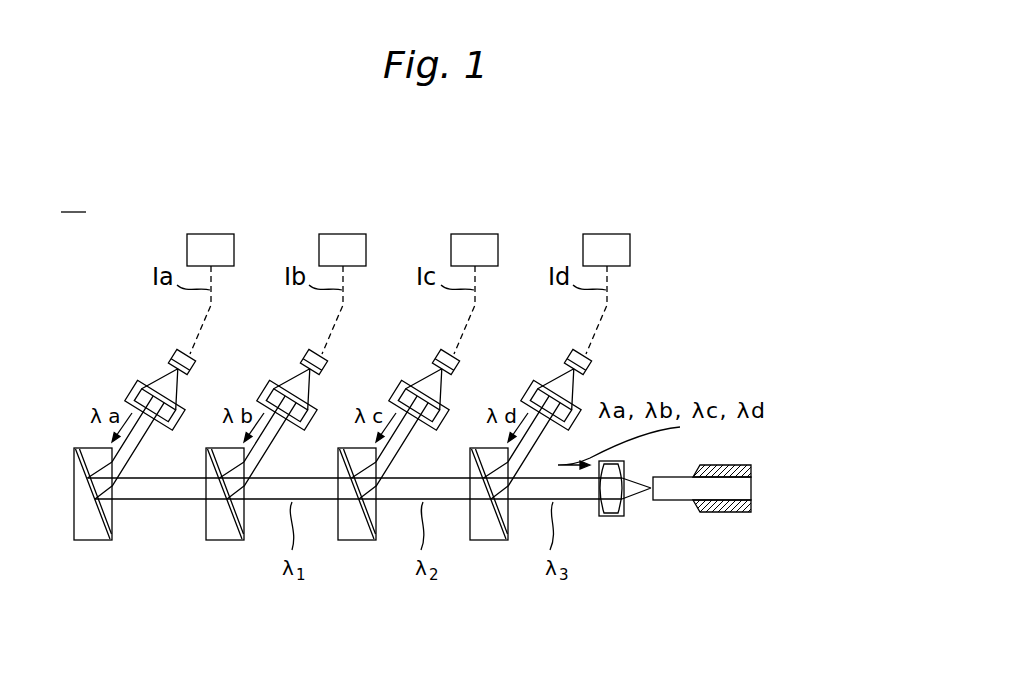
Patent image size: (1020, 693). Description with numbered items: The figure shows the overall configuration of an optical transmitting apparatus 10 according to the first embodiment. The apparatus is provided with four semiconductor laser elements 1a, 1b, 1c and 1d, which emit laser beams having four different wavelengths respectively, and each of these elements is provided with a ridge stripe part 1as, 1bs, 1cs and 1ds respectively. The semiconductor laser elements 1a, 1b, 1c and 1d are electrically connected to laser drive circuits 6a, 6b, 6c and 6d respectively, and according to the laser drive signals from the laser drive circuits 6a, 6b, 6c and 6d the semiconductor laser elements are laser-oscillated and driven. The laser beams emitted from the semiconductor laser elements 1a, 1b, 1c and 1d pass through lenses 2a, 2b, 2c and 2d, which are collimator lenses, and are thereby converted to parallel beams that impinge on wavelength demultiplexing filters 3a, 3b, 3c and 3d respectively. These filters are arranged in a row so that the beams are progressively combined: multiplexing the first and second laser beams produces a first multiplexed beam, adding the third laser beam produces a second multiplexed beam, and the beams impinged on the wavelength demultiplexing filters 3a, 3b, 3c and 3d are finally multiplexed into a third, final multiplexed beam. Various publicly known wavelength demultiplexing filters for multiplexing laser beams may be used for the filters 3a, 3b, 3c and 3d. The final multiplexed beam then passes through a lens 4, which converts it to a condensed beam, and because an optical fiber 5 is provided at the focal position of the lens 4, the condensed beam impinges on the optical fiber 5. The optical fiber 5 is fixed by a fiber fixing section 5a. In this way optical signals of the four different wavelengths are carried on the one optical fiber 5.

The optical transmitting apparatus 10 is at (77, 200).
The semiconductor laser element 1a is at (173, 352).
The semiconductor laser element 1b is at (287, 336).
The semiconductor laser element 1c is at (419, 336).
The semiconductor laser element 1d is at (551, 336).
The ridge stripe part 1as is at (185, 351).
The ridge stripe part 1bs is at (310, 334).
The ridge stripe part 1cs is at (441, 334).
The ridge stripe part 1ds is at (574, 334).
The lens 2a is at (136, 386).
The lens 2b is at (271, 382).
The lens 2c is at (403, 382).
The lens 2d is at (535, 382).
The wavelength demultiplexing filter 3a is at (90, 540).
The wavelength demultiplexing filter 3b is at (225, 531).
The wavelength demultiplexing filter 3c is at (357, 531).
The wavelength demultiplexing filter 3d is at (489, 531).
The lens 4 is at (609, 517).
The optical fiber 5 is at (736, 533).
The fiber fixing section 5a is at (751, 468).
The laser drive circuit 6a is at (213, 234).
The laser drive circuit 6b is at (342, 270).
The laser drive circuit 6c is at (474, 270).
The laser drive circuit 6d is at (606, 270).